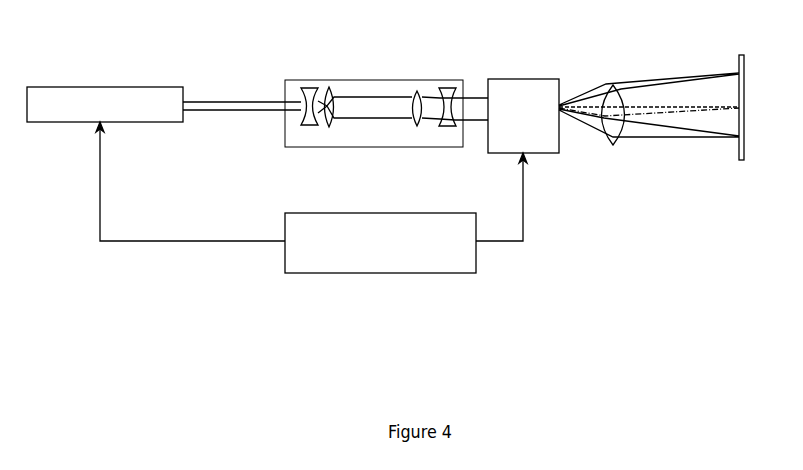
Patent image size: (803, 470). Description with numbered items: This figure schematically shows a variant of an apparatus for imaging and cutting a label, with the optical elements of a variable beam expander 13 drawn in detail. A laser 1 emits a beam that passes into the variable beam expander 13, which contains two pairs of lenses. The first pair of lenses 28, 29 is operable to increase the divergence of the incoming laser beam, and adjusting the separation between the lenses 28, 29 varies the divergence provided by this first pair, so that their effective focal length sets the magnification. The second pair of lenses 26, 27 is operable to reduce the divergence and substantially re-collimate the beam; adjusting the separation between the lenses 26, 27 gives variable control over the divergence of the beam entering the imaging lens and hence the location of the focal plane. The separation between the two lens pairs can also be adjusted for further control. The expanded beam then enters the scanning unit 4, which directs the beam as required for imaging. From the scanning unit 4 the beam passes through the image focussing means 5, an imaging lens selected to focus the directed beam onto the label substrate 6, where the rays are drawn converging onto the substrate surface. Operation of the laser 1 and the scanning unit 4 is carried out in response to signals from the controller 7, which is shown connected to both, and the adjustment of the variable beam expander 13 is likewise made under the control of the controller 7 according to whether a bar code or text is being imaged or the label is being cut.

The laser 1 is at (95, 87).
The variable beam expander 13 is at (288, 150).
The lens 28 is at (297, 80).
The lens 29 is at (330, 87).
The lens 26 is at (417, 91).
The lens 27 is at (452, 88).
The scanning unit 4 is at (520, 79).
The image focussing means 5 is at (606, 82).
The label substrate 6 is at (738, 60).
The controller 7 is at (385, 275).